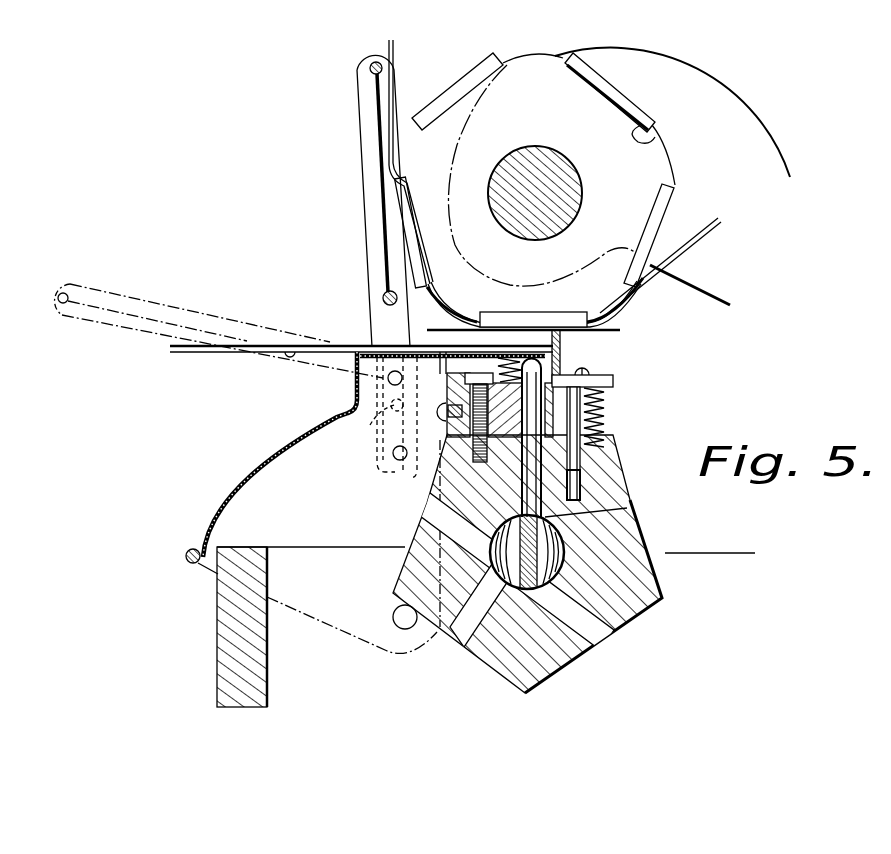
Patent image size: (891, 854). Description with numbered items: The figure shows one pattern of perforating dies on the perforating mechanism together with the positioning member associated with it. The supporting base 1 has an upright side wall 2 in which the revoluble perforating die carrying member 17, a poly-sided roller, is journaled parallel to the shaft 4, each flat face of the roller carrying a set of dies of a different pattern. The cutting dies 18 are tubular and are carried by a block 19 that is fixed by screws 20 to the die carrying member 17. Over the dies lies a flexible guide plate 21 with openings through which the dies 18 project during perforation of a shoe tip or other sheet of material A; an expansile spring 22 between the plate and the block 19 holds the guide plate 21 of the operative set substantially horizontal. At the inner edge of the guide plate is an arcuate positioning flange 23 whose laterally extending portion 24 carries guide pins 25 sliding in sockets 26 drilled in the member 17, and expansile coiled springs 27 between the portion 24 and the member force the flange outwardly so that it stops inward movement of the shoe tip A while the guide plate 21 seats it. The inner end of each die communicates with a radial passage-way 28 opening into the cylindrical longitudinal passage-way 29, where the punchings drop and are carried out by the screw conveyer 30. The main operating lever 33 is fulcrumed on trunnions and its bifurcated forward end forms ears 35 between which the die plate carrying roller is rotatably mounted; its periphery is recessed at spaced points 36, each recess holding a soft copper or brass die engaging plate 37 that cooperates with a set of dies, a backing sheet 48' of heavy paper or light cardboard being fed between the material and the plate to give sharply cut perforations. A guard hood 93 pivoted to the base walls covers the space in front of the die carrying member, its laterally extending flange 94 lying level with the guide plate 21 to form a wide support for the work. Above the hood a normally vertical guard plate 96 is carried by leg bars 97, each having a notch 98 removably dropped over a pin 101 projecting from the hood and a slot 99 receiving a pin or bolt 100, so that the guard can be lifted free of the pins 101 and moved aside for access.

The supporting base 1 is at (210, 660).
The left hand upright side wall 2 is at (352, 635).
The shaft 4 is at (508, 337).
The perforating die carrying member 17 is at (656, 550).
The cutting dies 18 is at (549, 365).
The block 19 is at (481, 463).
The screws 20 is at (481, 431).
The flexible guide plate 21 is at (479, 352).
The expansile spring 22 is at (468, 350).
The arcuate positioning flange 23 is at (566, 347).
The laterally extending portion 24 is at (614, 382).
The guide pins 25 is at (580, 466).
The sockets 26 is at (581, 498).
The expansile coiled springs 27 is at (608, 422).
The radial passage-way 28 is at (466, 528).
The longitudinal passage-way 29 is at (530, 597).
The screw conveyer 30 is at (549, 544).
The main operating lever 33 is at (711, 298).
The ears 35 is at (608, 63).
The recesses 36 is at (574, 170).
The die engaging plate 37 is at (636, 105).
The backing sheet 48' is at (677, 267).
The guard hood 93 is at (214, 512).
The laterally extending flange 94 is at (438, 410).
The guard plate 96 is at (381, 251).
The leg bars 97 is at (359, 150).
The notch or open end slot 98 is at (395, 474).
The slot 99 is at (374, 418).
The pin or bolt 100 is at (388, 378).
The pins or bolts 101 is at (393, 454).
The shoe tip or other sheet of material A is at (185, 349).